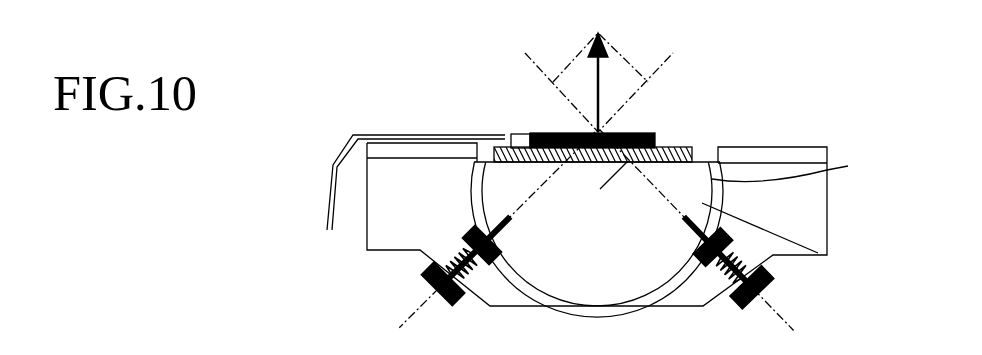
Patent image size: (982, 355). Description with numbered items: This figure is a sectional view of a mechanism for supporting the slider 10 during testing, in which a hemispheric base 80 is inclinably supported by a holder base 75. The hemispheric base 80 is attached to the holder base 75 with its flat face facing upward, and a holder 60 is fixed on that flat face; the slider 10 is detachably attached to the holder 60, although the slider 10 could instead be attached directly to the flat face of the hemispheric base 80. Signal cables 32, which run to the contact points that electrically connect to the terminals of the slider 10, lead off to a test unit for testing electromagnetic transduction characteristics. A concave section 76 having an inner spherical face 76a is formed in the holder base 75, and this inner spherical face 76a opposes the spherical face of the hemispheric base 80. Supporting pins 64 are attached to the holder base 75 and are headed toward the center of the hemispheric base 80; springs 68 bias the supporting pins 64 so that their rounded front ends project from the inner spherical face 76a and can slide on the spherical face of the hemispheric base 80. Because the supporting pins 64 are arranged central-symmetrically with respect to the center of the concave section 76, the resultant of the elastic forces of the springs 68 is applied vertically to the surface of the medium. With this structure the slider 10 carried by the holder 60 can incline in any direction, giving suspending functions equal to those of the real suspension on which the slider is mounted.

The slider 10 is at (553, 131).
The signal cables 32 is at (388, 133).
The holder 60 is at (682, 146).
The supporting pins 64 is at (420, 278).
The springs 68 is at (470, 276).
The holder base 75 is at (817, 210).
The concave section 76 is at (827, 256).
The inner spherical face 76a is at (801, 167).
The hemispheric base 80 is at (643, 132).